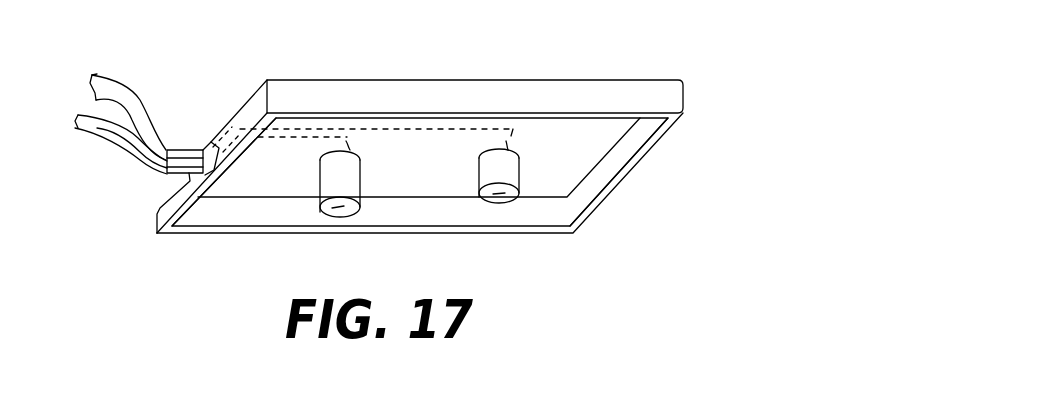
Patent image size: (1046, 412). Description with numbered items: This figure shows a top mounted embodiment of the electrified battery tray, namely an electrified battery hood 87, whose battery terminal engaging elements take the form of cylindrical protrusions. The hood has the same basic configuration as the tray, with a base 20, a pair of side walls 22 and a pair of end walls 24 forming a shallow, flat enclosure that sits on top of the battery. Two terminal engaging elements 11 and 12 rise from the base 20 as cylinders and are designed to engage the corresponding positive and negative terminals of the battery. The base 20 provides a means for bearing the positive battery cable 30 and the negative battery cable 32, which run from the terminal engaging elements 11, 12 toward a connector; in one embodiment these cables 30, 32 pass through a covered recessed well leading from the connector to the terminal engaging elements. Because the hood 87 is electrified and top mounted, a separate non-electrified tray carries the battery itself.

The electrified battery hood 87 is at (619, 66).
The side wall 22 is at (447, 95).
The base 20 is at (674, 126).
The end wall 24 is at (614, 191).
The terminal engaging element 11 is at (325, 217).
The terminal engaging element 12 is at (497, 203).
The positive battery cable 30 is at (127, 84).
The negative battery cable 32 is at (94, 134).